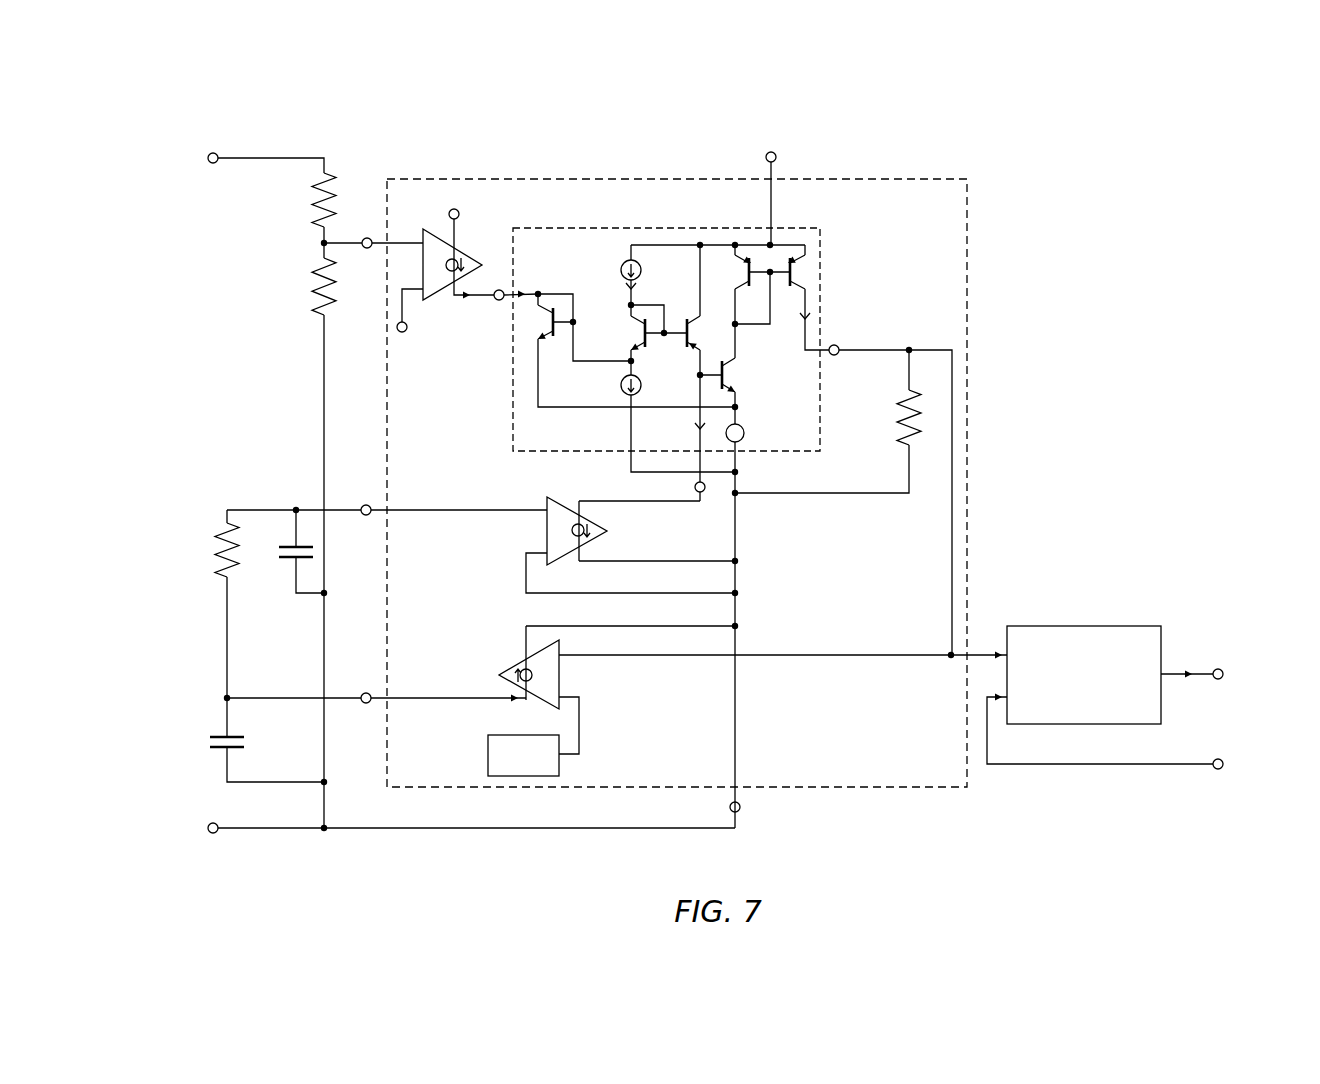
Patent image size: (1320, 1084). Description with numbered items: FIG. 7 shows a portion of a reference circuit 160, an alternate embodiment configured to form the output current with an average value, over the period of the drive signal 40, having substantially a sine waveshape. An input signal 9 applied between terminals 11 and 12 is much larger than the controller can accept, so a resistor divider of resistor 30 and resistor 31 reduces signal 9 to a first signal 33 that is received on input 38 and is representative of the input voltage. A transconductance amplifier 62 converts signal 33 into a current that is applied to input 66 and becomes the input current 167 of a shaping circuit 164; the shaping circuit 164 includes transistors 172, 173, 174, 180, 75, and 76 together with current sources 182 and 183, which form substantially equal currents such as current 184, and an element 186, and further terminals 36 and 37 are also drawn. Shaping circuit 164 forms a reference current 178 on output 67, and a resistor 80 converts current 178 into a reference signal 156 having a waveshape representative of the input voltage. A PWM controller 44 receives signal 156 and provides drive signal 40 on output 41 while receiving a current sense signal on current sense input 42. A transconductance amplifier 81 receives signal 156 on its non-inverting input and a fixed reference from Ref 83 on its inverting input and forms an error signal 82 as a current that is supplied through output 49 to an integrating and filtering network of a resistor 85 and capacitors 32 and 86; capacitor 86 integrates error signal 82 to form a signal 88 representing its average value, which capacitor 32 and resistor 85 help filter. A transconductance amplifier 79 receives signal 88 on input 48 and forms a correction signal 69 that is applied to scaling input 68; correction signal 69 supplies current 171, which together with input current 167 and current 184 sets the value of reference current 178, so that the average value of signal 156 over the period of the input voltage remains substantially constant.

The signal 9 is at (262, 158).
The input terminal 11 is at (209, 154).
The ground terminal 12 is at (216, 833).
The resistor 30 is at (312, 195).
The resistor 31 is at (312, 284).
The capacitor 32 is at (290, 565).
The first signal 33 is at (350, 246).
The supply terminal 36 is at (775, 152).
The terminals 37 is at (459, 213).
The input 38 is at (367, 238).
The drive signal 40 is at (1220, 679).
The output 41 is at (1222, 669).
The current sense input 42 is at (1217, 770).
The PWM controller 44 is at (1085, 626).
The input 48 is at (366, 505).
The output 49 is at (366, 703).
The transconductance amplifier 62 is at (447, 302).
The input 66 is at (496, 302).
The output 67 is at (838, 355).
The scaling input 68 is at (703, 493).
The correction signal 69 is at (612, 497).
The transistor 75 is at (742, 277).
The transistor 76 is at (794, 270).
The transconductance amplifier 79 is at (598, 536).
The resistor 80 is at (897, 430).
The transconductance amplifier 81 is at (520, 663).
The error signal 82 is at (465, 698).
The fixed reference circuit 83 is at (488, 752).
The resistor 85 is at (215, 540).
The capacitor 86 is at (215, 735).
The signal 88 is at (465, 512).
The reference signal 156 is at (967, 440).
The reference circuit 160 is at (967, 273).
The shaping circuit 164 is at (643, 228).
The input current 167 is at (513, 350).
The current 171 is at (692, 428).
The transistor 172 is at (553, 306).
The transistor 173 is at (695, 348).
The transistor 174 is at (730, 378).
The reference current 178 is at (798, 331).
The transistor 180 is at (639, 332).
The current source 182 is at (621, 270).
The current source 183 is at (620, 385).
The current 184 is at (638, 293).
The voltage source 186 is at (745, 440).